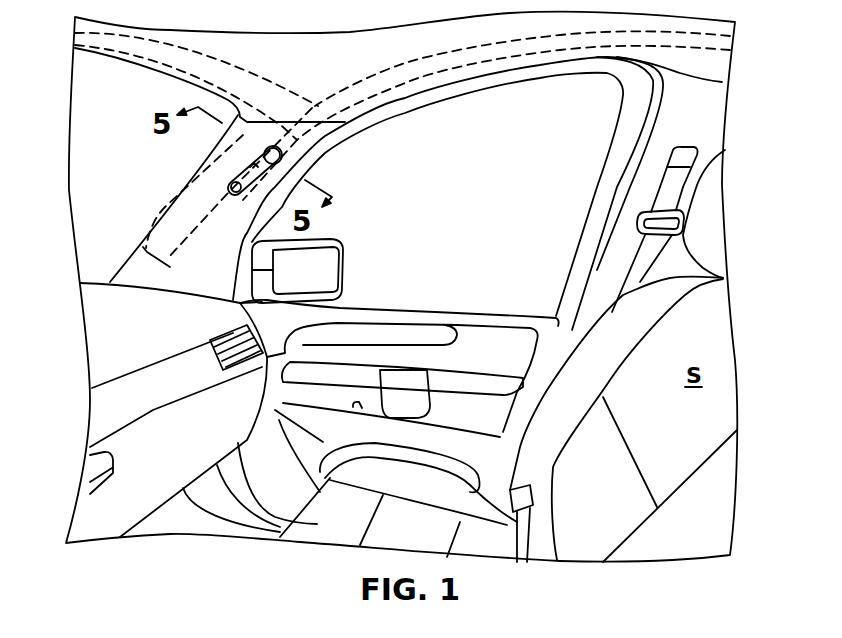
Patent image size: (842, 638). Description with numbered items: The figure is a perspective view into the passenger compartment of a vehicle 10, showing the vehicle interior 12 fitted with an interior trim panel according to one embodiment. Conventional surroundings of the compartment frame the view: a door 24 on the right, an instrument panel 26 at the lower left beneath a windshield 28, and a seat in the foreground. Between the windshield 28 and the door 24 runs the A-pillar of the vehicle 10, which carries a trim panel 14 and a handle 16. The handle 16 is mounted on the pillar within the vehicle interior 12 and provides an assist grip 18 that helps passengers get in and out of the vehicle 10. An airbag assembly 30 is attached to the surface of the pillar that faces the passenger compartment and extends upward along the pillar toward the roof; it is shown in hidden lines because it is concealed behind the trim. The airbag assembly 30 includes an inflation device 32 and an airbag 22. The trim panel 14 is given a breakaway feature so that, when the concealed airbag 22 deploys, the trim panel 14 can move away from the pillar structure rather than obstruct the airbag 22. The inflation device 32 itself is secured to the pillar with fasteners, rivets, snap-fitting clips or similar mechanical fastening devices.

The vehicle 10 is at (739, 131).
The vehicle interior 12 is at (437, 252).
The trim panel 14 is at (298, 162).
The handle 16 is at (256, 192).
The assist grip 18 is at (237, 157).
The airbag 22 is at (167, 210).
The door 24 is at (482, 350).
The instrument panel 26 is at (142, 337).
The windshield 28 is at (120, 133).
The airbag assembly 30 is at (190, 258).
The inflation device 32 is at (142, 243).